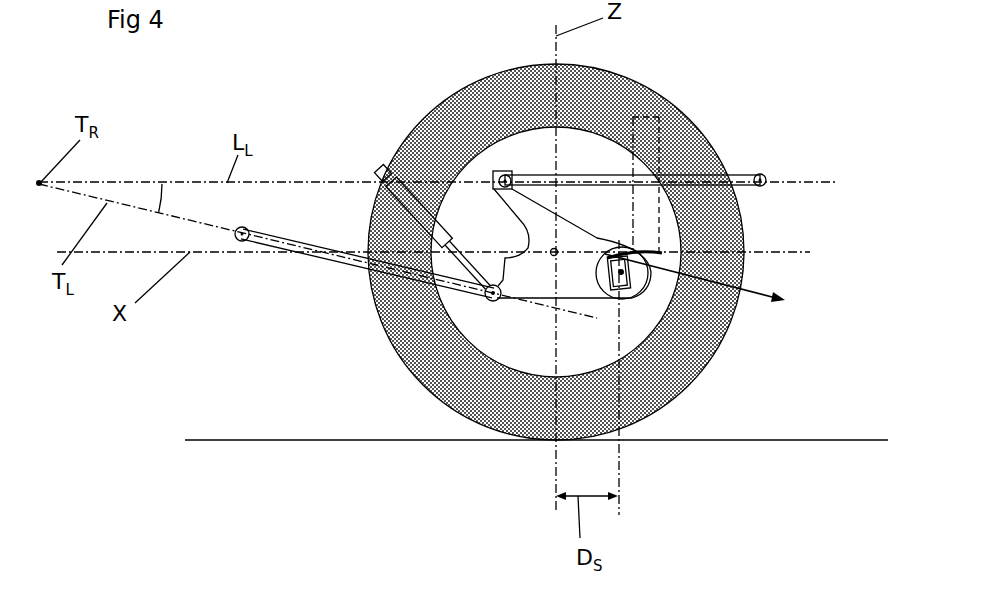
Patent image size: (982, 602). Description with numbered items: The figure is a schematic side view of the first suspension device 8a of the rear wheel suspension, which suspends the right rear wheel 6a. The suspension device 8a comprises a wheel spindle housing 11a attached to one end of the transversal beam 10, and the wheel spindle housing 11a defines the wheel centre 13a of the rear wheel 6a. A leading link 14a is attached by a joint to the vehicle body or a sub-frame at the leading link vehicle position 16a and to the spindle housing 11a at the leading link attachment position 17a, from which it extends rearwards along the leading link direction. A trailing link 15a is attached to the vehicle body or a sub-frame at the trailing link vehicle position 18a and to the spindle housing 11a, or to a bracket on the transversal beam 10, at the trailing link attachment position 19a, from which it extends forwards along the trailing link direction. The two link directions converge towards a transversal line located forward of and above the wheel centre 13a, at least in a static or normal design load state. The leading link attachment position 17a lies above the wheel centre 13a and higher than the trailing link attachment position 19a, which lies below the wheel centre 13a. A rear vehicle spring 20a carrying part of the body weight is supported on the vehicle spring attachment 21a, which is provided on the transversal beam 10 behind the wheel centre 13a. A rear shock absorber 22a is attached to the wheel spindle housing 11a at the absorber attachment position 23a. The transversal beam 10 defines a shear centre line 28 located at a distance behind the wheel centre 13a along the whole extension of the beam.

The right rear wheel 6a is at (492, 110).
The first suspension device 8a is at (504, 235).
The transversal beam 10 is at (630, 277).
The wheel spindle housing 11a is at (520, 224).
The wheel centre 13a is at (552, 258).
The leading link 14a is at (722, 175).
The trailing link 15a is at (327, 258).
The leading link vehicle position 16a is at (763, 174).
The leading link attachment position 17a is at (505, 175).
The trailing link vehicle position 18a is at (237, 238).
The trailing link attachment position 19a is at (487, 300).
The rear vehicle spring 20a is at (648, 211).
The vehicle spring attachment 21a is at (721, 287).
The rear shock absorber 22a is at (376, 168).
The absorber attachment position 23a is at (487, 287).
The shear centre line 28 is at (621, 272).